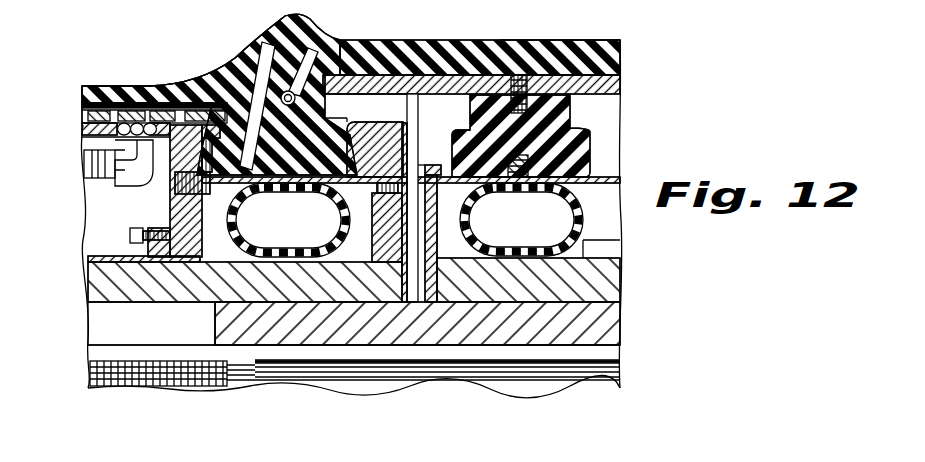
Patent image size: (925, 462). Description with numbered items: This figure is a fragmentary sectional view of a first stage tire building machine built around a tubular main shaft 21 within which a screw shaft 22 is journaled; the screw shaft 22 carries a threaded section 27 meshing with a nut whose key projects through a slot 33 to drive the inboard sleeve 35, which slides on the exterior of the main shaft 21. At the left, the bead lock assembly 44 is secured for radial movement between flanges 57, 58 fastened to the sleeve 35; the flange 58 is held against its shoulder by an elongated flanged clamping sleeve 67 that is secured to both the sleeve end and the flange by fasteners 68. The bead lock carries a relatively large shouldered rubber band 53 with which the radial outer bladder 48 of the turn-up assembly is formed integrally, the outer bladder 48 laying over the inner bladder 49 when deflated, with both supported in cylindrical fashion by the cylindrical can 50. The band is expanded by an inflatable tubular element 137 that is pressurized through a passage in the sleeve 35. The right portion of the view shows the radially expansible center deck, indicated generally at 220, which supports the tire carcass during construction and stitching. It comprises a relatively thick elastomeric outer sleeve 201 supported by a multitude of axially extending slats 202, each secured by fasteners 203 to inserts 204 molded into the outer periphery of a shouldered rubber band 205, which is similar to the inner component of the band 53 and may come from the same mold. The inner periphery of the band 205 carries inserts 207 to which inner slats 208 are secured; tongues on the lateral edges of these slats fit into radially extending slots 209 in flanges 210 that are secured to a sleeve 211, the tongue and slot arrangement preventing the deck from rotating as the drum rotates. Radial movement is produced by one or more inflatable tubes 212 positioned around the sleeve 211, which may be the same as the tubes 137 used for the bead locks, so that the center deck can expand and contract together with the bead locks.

The main shaft 21 is at (335, 347).
The screw shaft 22 is at (438, 374).
The threaded section 27 is at (190, 383).
The slot 33 is at (100, 321).
The inboard sleeve 35 is at (100, 281).
The outboard bead lock assembly 44 is at (250, 41).
The radial outer bladder 48 is at (107, 85).
The inner bladder 49 is at (81, 101).
The cylindrical can 50 is at (81, 136).
The shouldered rubber band 53 is at (346, 107).
The flange 57 is at (403, 147).
The flange 58 is at (172, 207).
The clamping sleeve 67 is at (100, 258).
The fasteners 68 is at (135, 233).
The tubular element 137 is at (240, 229).
The elastomeric outer sleeve 201 is at (621, 52).
The slats 202 is at (619, 87).
The fasteners 203 is at (546, 66).
The inserts 204 is at (492, 41).
The shouldered rubber band 205 is at (590, 156).
The inserts 207 is at (521, 179).
The slats 208 is at (610, 183).
The slots 209 is at (453, 205).
The flanges 210 is at (425, 166).
The sleeve 211 is at (615, 283).
The inflatable tubes 212 is at (621, 240).
The seal assembly 220 is at (628, 124).